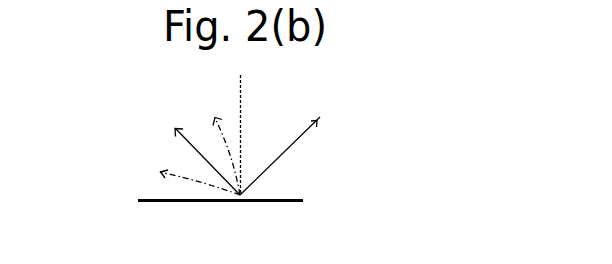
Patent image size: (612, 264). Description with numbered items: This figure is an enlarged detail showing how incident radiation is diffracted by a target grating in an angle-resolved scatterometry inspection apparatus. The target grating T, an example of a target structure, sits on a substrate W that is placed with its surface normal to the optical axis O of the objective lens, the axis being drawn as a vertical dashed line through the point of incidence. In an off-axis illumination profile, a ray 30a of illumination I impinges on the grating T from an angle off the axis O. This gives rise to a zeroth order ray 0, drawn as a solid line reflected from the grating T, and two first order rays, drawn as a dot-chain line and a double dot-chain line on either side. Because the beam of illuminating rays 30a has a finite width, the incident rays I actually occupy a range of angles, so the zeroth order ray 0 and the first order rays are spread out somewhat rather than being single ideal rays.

The ray of illumination 30a is at (312, 146).
The substrate W is at (168, 199).
The optical axis O is at (252, 134).
The illumination I is at (283, 146).
The zeroth order ray 0 is at (200, 152).
The target grating T is at (266, 185).